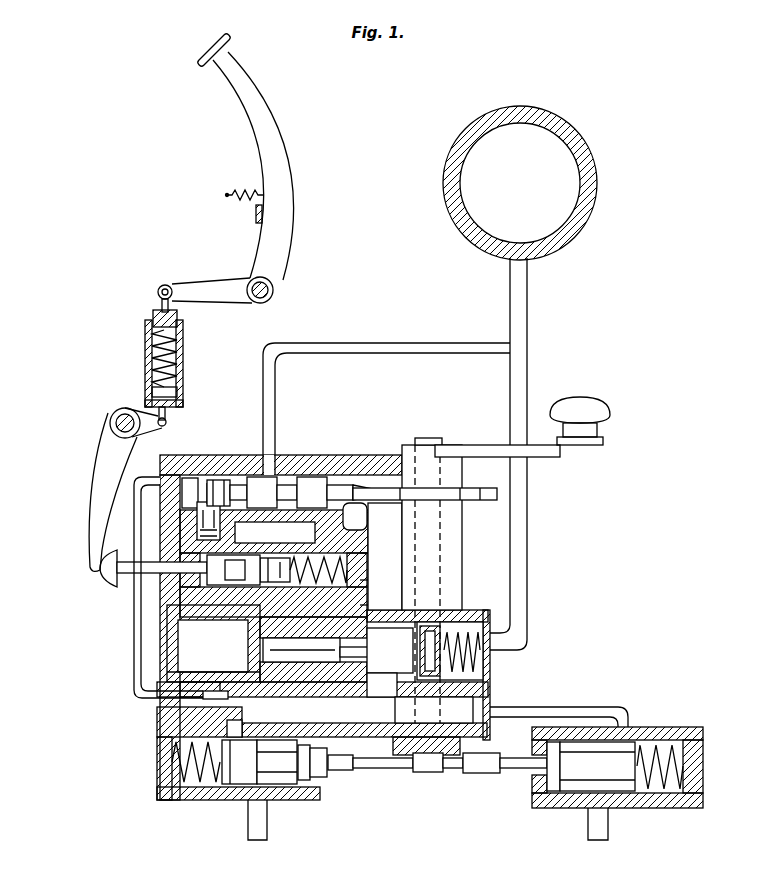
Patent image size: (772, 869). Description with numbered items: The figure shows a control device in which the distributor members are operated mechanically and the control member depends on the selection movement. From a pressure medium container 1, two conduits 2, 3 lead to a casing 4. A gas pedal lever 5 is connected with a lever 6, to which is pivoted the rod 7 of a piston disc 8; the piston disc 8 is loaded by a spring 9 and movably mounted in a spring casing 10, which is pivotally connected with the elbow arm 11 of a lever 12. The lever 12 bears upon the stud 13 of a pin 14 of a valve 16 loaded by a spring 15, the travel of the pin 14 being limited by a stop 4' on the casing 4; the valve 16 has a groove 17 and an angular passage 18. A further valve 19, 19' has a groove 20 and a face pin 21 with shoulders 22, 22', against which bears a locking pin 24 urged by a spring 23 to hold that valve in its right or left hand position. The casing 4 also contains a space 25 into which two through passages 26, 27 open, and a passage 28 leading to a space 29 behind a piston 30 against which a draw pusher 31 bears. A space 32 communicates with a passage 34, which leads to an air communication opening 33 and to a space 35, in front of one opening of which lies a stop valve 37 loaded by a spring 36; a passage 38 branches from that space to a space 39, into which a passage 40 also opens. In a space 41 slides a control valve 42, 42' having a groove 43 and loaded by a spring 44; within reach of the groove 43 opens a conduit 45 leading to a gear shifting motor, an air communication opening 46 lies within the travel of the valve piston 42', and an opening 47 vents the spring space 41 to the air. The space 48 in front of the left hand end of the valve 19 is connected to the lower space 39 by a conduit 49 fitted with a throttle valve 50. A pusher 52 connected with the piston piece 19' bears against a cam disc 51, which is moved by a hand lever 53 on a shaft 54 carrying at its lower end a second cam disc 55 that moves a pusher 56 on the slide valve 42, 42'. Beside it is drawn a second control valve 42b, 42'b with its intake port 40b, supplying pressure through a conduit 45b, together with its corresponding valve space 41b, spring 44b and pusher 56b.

The pressure medium container 1 is at (520, 183).
The conduit 2 is at (523, 333).
The conduit 3 is at (365, 348).
The casing 4 is at (339, 627).
The stop 4' is at (159, 637).
The gas pedal lever 5 is at (245, 95).
The lever 6 is at (213, 290).
The rod 7 is at (160, 307).
The piston disc 8 is at (185, 390).
The spring 9 is at (185, 347).
The spring casing 10 is at (145, 363).
The elbow arm 11 is at (152, 428).
The lever 12 is at (100, 500).
The stud 13 is at (103, 580).
The pin 14 is at (123, 582).
The spring 15 is at (346, 560).
The valve 16 is at (220, 558).
The groove 17 is at (300, 570).
The angular passage 18 is at (240, 558).
The further valve 19 is at (272, 469).
The piston piece 19' is at (352, 465).
The groove 20 is at (313, 487).
The face pin 21 is at (240, 488).
The shoulder 22 is at (232, 457).
The shoulder 22' is at (216, 468).
The spring 23 is at (203, 508).
The locking pin 24 is at (198, 508).
The space 25 is at (353, 487).
The through passage 26 is at (290, 490).
The through passage 27 is at (278, 565).
The passage 28 is at (173, 625).
The space 29 is at (200, 643).
The piston 30 is at (173, 682).
The draw pusher 31 is at (310, 657).
The space 32 is at (370, 545).
The air communication opening 33 is at (372, 587).
The passage 34 is at (372, 567).
The space 35 is at (378, 635).
The spring 36 is at (432, 636).
The stop valve 37 is at (450, 630).
The passage 38 is at (380, 683).
The space 39 is at (388, 718).
The passage 40 is at (238, 735).
The intake port 40b is at (627, 730).
The space 41 is at (230, 786).
The cylinder block 41b is at (673, 792).
The control valve 42 is at (228, 783).
The control valve piston 42' is at (336, 787).
The second control valve 42b is at (617, 787).
The second control valve piston 42'b is at (541, 791).
The groove 43 is at (273, 777).
The spring 44 is at (186, 786).
The spring 44b is at (680, 743).
The conduit 45 is at (260, 818).
The conduit 45b is at (597, 838).
The air communication opening 46 is at (291, 788).
The opening 47 is at (163, 778).
The space 48 is at (190, 493).
The conduit 49 is at (140, 703).
The throttle valve 50 is at (212, 702).
The cam disc 51 is at (483, 498).
The pusher 52 is at (362, 492).
The hand lever 53 is at (580, 428).
The shaft 54 is at (425, 773).
The second cam disc 55 is at (468, 775).
The pusher 56 is at (334, 764).
The rod 56b is at (513, 772).